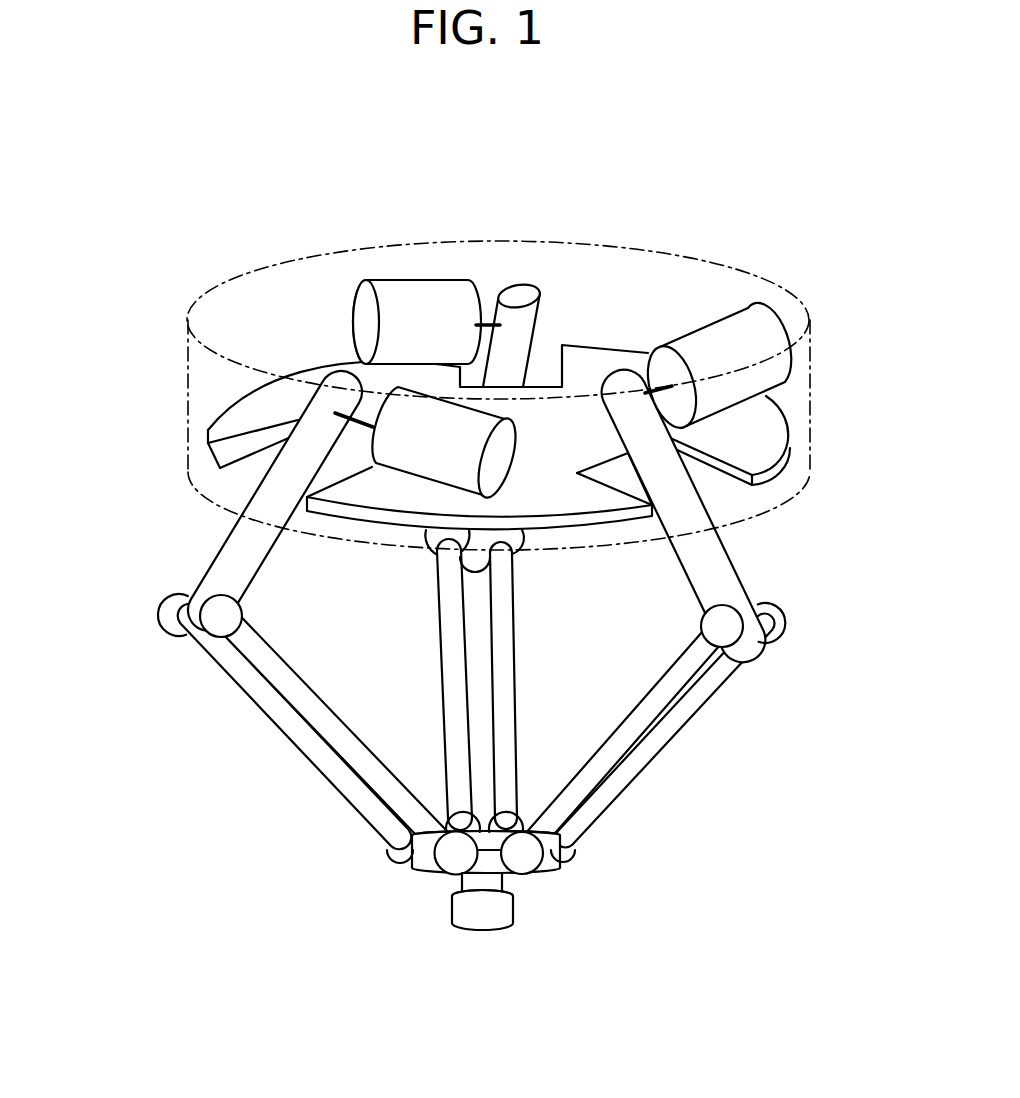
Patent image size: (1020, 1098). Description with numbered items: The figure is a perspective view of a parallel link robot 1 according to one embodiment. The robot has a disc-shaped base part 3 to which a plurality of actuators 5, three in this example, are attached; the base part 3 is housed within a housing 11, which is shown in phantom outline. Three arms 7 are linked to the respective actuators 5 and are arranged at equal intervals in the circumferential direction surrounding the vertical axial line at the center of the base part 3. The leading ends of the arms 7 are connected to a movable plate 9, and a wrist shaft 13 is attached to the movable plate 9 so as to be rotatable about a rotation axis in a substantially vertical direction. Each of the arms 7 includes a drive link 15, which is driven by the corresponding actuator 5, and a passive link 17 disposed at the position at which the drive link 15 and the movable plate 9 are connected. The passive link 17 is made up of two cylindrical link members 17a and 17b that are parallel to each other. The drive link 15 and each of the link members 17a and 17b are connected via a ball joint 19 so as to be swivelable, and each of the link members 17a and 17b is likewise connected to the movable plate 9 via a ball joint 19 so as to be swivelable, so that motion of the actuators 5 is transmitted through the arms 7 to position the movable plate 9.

The parallel link robot 1 is at (170, 203).
The base part 3 is at (765, 433).
The actuator 5 is at (393, 281).
The arm 7 is at (433, 657).
The movable plate 9 is at (415, 868).
The housing 11 is at (188, 392).
The wrist shaft 13 is at (478, 933).
The drive link 15 is at (520, 290).
The passive link 17 is at (476, 698).
The link member 17a is at (507, 647).
The link member 17b is at (263, 693).
The ball joint 19 is at (425, 553).